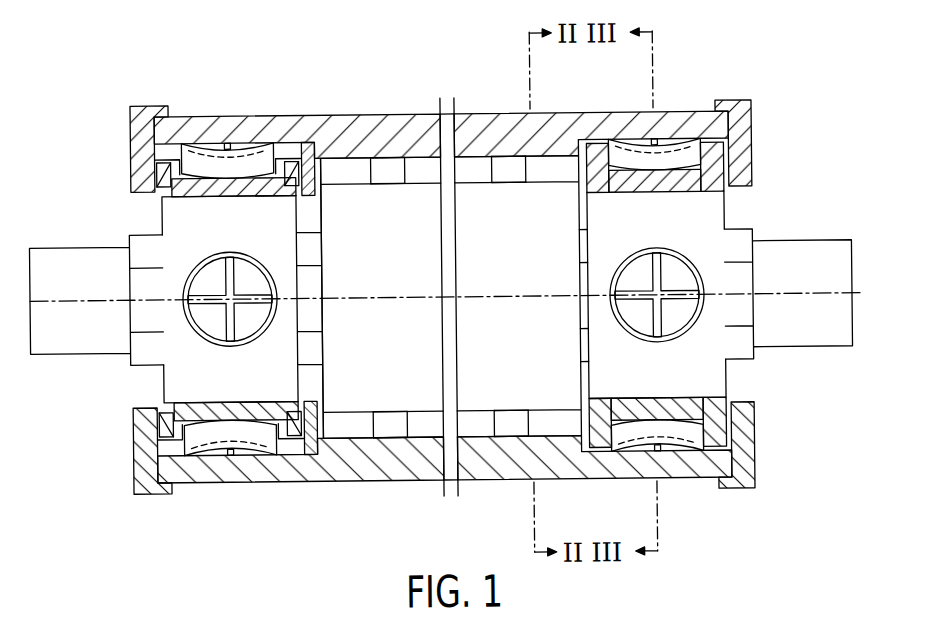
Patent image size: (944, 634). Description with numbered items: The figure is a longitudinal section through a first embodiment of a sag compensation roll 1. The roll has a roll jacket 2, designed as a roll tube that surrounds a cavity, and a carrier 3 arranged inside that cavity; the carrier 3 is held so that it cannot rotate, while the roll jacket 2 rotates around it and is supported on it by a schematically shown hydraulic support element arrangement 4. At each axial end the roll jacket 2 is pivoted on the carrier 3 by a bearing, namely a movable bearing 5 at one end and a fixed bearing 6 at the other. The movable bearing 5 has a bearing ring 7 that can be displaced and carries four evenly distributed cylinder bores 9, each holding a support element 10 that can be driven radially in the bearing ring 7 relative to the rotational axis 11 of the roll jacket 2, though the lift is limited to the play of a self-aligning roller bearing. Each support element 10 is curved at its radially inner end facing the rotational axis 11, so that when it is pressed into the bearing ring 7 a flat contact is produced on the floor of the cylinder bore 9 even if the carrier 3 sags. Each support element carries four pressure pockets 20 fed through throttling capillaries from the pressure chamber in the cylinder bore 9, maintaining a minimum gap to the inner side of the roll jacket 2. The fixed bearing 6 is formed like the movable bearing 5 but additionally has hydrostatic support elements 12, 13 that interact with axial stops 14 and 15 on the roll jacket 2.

The sag compensation roll 1 is at (421, 90).
The roll jacket 2 is at (395, 114).
The carrier 3 is at (803, 248).
The hydraulic support element arrangement 4 is at (392, 173).
The movable bearing 5 is at (703, 264).
The fixed bearing 6 is at (215, 263).
The bearing ring 7 is at (606, 193).
The cylinder bore 9 is at (703, 175).
The support element 10 is at (633, 167).
The rotational axis 11 is at (805, 298).
The hydrostatic support element 12 is at (258, 116).
The hydrostatic support element 13 is at (158, 170).
The axial stop 14 is at (305, 142).
The axial stop 15 is at (142, 106).
The pressure pocket 20 is at (640, 140).